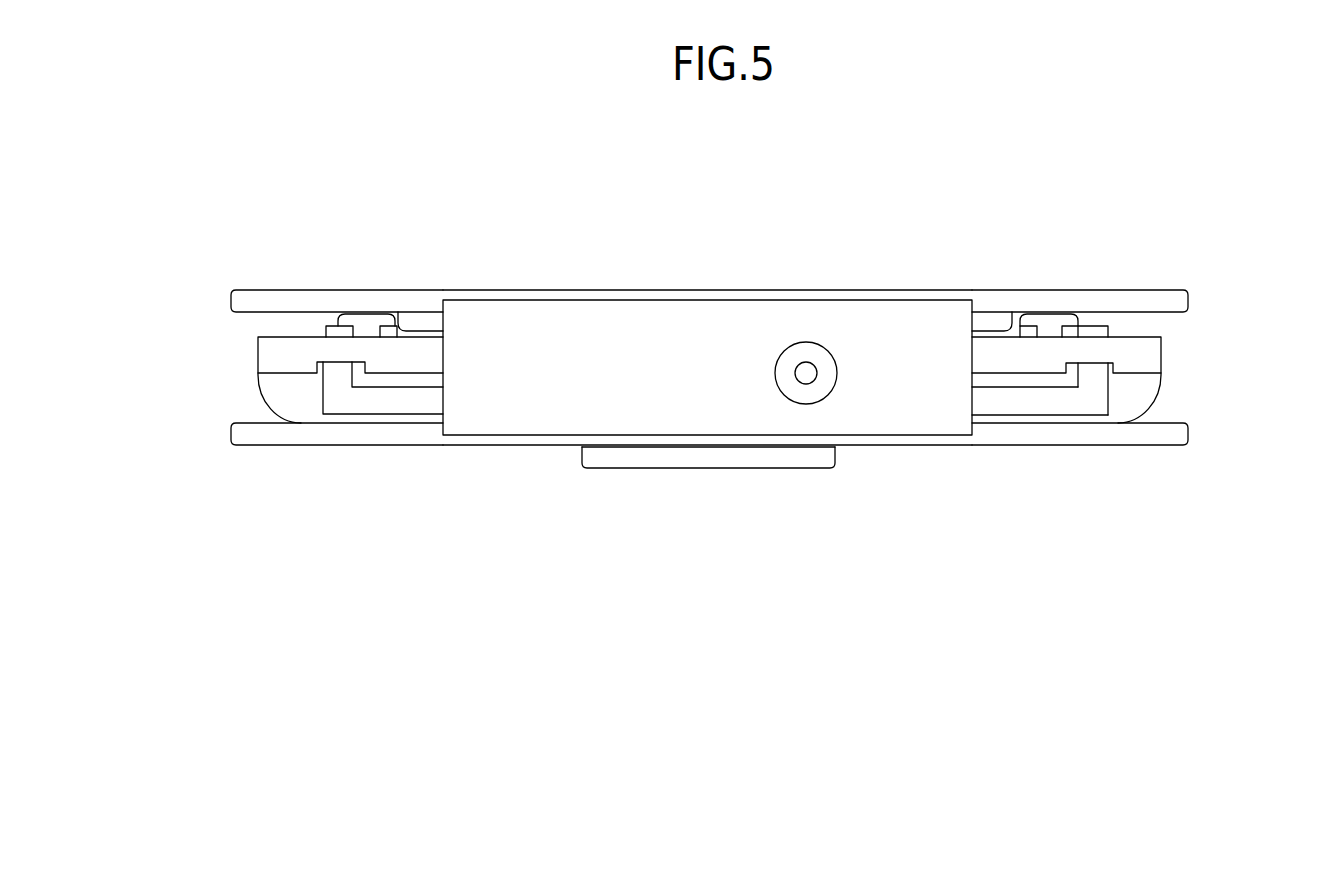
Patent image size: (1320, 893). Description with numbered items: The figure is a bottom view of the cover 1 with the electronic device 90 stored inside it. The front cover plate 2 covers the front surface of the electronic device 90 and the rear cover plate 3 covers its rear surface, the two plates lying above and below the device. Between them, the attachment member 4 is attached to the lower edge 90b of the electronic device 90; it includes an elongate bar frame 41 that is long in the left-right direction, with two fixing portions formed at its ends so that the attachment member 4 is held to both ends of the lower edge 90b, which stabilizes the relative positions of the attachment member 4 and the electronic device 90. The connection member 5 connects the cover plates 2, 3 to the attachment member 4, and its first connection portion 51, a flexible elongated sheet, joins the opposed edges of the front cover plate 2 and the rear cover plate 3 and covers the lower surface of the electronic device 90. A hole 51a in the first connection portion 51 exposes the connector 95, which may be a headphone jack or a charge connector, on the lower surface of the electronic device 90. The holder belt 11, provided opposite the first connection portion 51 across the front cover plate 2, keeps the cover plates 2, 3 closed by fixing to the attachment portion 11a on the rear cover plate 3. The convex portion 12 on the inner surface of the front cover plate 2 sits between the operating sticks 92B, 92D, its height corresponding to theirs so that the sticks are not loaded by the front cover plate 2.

The cover 1 is at (1021, 209).
The front cover plate 2 is at (1138, 290).
The rear cover plate 3 is at (1105, 446).
The attachment member 4 is at (997, 430).
The frame 41 is at (1042, 403).
The connection member 5 is at (430, 354).
The first connection portion 51 is at (625, 312).
The hole 51a is at (836, 373).
The connector 95 is at (805, 362).
The holder belt 11 is at (728, 468).
The attachment portion 11a is at (657, 443).
The convex portion 12 is at (987, 316).
The electronic device 90 is at (1214, 363).
The lower edge 90b is at (434, 343).
The operating stick 92B is at (1047, 315).
The operating stick 92D is at (352, 313).